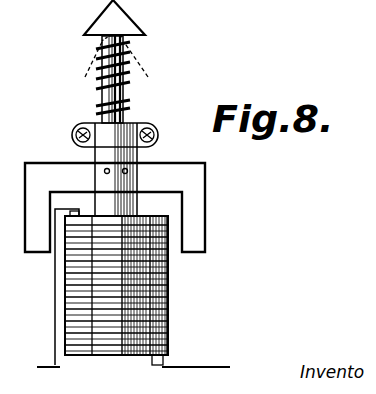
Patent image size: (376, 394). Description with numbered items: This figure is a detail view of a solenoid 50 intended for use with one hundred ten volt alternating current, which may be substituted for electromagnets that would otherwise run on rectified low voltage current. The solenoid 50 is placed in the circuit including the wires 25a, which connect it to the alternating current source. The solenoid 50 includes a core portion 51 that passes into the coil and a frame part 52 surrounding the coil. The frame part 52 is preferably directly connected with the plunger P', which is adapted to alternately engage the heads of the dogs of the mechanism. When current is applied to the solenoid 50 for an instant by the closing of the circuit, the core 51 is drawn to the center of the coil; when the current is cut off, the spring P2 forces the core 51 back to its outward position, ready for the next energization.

The plunger P' is at (138, 61).
The spring P2 is at (148, 77).
The core portion 51 is at (117, 207).
The frame part 52 is at (206, 207).
The solenoid 50 is at (170, 281).
The wires 25a is at (60, 367).